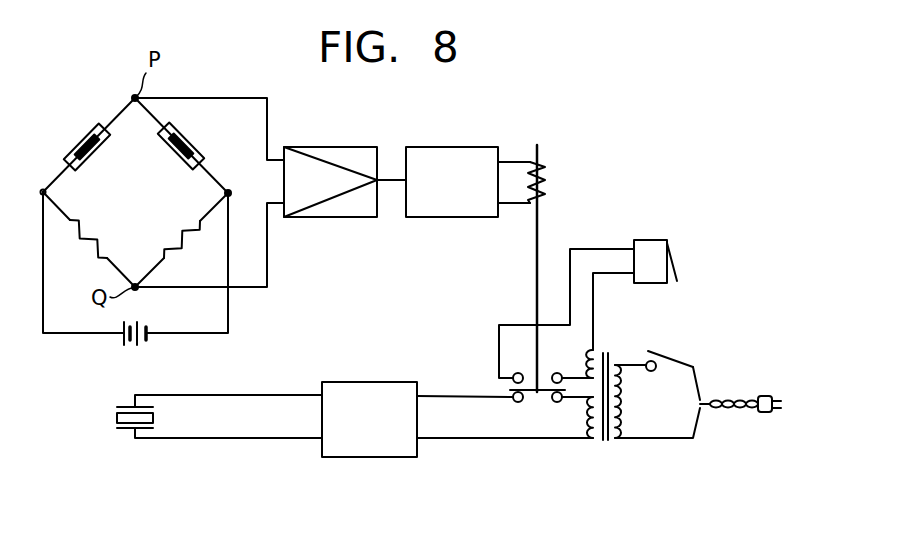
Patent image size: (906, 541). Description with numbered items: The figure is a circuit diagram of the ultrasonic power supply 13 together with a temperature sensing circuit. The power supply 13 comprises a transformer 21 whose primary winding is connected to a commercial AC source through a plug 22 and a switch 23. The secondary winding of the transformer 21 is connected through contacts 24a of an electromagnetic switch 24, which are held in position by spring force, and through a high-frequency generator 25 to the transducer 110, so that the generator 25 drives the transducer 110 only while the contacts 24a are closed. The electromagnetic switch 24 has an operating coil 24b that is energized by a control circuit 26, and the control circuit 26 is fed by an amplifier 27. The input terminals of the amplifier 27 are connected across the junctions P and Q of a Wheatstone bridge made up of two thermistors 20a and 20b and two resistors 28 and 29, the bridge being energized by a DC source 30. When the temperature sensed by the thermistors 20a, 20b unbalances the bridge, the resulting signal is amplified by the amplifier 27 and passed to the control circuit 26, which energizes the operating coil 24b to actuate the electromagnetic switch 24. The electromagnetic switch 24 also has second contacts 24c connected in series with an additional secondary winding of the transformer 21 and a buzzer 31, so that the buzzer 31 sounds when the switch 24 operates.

The power supply 13 is at (448, 337).
The thermistor 20a is at (85, 138).
The thermistor 20b is at (189, 147).
The transformer 21 is at (608, 441).
The plug 22 is at (757, 412).
The switch 23 is at (660, 352).
The electromagnetic switch 24 is at (533, 267).
The contacts 24a is at (532, 403).
The operating coil 24b is at (548, 177).
The second contacts 24c is at (548, 374).
The high-frequency generator 25 is at (378, 458).
The control circuit 26 is at (472, 147).
The amplifier 27 is at (338, 147).
The resistor 28 is at (90, 235).
The resistor 29 is at (172, 235).
The DC source 30 is at (150, 346).
The buzzer 31 is at (650, 240).
The transducer 110 is at (136, 440).